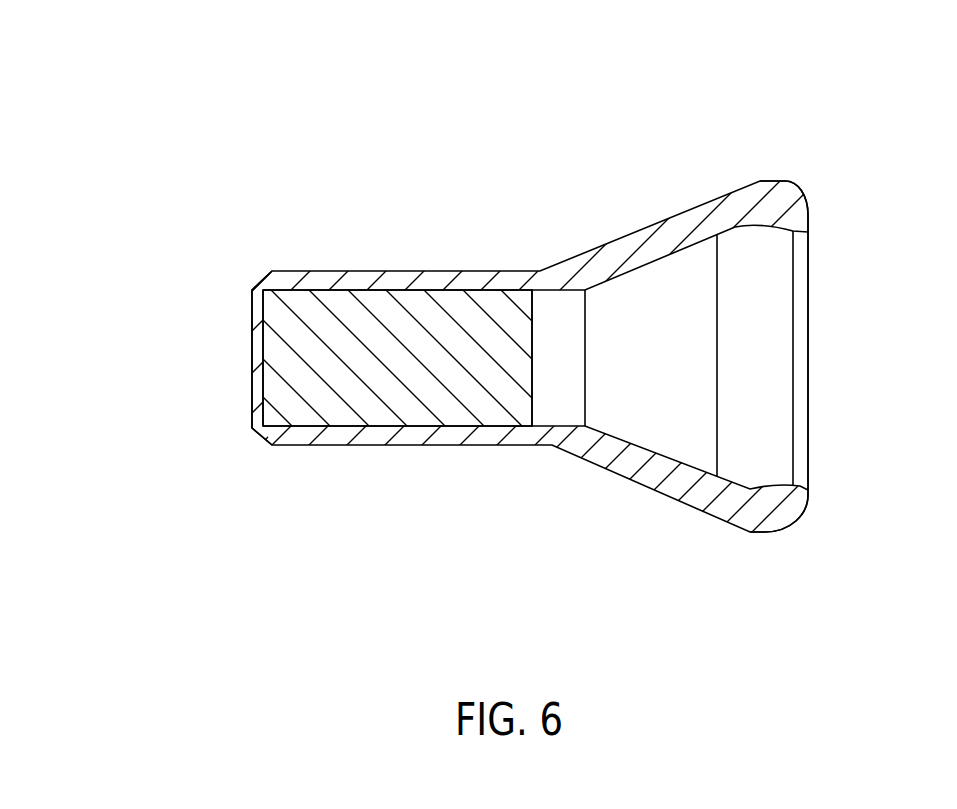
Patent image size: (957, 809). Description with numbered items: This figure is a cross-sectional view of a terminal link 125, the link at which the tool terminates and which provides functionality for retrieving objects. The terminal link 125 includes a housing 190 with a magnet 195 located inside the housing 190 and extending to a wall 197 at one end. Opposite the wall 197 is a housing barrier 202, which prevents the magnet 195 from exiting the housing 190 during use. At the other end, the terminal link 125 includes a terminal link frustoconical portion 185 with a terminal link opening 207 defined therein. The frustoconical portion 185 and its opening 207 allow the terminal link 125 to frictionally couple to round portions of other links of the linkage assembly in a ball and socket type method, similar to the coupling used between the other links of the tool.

The terminal link 125 is at (461, 290).
The terminal link frustoconical portion 185 is at (800, 512).
The housing 190 is at (392, 447).
The magnet 195 is at (413, 308).
The wall 197 is at (252, 358).
The housing barrier 202 is at (550, 380).
The terminal link opening 207 is at (787, 398).